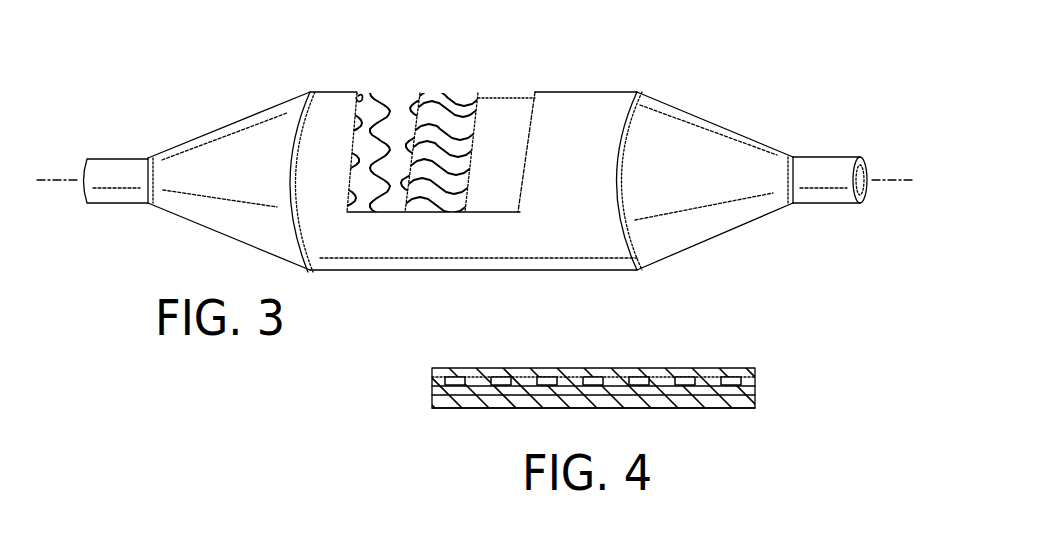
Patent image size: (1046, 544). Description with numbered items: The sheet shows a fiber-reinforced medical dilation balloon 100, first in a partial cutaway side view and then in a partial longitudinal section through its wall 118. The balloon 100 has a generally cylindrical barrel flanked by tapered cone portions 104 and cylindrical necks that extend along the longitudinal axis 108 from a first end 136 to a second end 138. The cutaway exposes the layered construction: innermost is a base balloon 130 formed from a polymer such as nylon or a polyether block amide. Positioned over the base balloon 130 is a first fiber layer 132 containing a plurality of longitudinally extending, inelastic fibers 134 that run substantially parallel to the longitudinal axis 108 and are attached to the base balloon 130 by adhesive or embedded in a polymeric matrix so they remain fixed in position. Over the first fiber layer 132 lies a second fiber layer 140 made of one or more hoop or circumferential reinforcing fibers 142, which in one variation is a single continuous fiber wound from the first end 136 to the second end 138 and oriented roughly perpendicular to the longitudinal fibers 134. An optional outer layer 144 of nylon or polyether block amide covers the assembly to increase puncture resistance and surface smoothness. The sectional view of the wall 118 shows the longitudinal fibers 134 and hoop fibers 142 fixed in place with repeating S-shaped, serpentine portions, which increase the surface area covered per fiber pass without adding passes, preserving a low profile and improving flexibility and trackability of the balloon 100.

In FIG. 3, the medical balloon 100 is at (699, 84).
In FIG. 3, the cone portion 104 is at (235, 127).
In FIG. 3, the longitudinal axis 108 is at (898, 178).
In FIG. 4, the wall 118 is at (677, 408).
In FIG. 3, the base balloon 130 is at (520, 92).
In FIG. 4, the base balloon 130 is at (488, 402).
In FIG. 3, the first fiber layer 132 is at (453, 103).
In FIG. 3, the longitudinal fibers 134 is at (438, 96).
In FIG. 4, the longitudinal fibers 134 is at (435, 387).
In FIG. 3, the first end 136 is at (82, 160).
In FIG. 3, the second end 138 is at (870, 158).
In FIG. 3, the second fiber layer 140 is at (390, 92).
In FIG. 3, the hoop fiber 142 is at (352, 130).
In FIG. 4, the hoop fiber 142 is at (677, 377).
In FIG. 3, the outer layer 144 is at (345, 90).
In FIG. 4, the outer layer 144 is at (525, 373).